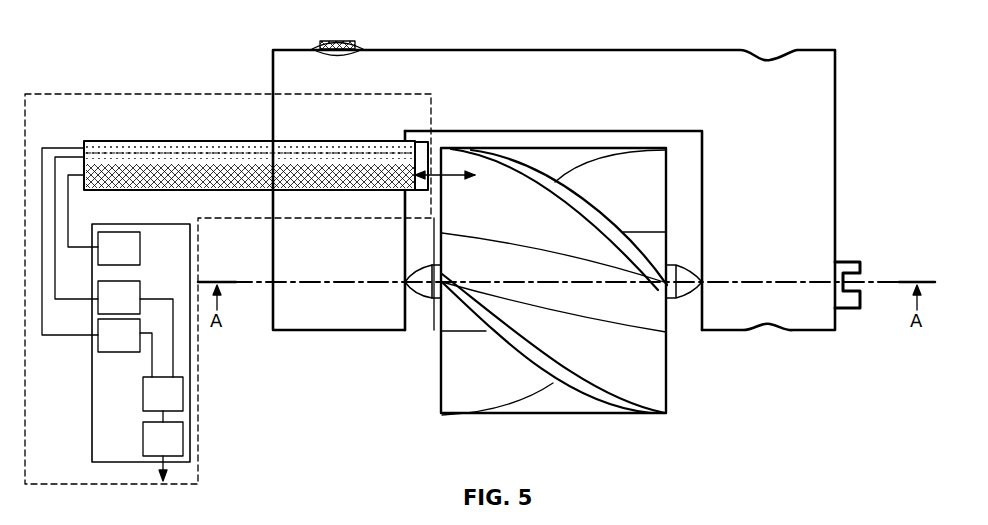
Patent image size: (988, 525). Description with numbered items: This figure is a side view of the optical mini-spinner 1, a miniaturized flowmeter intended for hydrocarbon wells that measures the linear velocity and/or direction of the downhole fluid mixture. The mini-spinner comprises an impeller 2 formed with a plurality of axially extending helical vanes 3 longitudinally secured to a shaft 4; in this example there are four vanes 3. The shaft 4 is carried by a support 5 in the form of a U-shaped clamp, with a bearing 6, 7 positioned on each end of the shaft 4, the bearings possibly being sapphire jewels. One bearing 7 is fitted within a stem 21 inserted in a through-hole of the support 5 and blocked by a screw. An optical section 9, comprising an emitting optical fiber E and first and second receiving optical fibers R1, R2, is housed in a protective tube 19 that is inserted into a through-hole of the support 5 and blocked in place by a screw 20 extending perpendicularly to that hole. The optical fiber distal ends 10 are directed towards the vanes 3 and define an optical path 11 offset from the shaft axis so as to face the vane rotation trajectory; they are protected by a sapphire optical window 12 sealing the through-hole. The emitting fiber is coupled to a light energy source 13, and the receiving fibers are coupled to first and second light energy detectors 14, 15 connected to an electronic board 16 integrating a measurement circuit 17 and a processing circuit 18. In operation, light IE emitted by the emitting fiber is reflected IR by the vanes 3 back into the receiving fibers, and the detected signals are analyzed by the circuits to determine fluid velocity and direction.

The optical mini-spinner 1 is at (301, 401).
The impeller 2 is at (657, 418).
The vanes 3 is at (461, 395).
The shaft 4 is at (667, 334).
The support 5 is at (840, 151).
The bearing 6 is at (420, 306).
The bearing 7 is at (704, 280).
The optical section 9 is at (77, 92).
The optical fiber distal ends 10 is at (416, 141).
The optical path 11 is at (435, 150).
The optical window 12 is at (421, 189).
The light energy source 13 is at (131, 258).
The first light energy detector 14 is at (131, 307).
The second light energy detector 15 is at (131, 345).
The electronic board 16 is at (105, 447).
The measurement circuit 17 is at (175, 403).
The processing circuit 18 is at (175, 448).
The protective tube 19 is at (260, 140).
The screw 20 is at (337, 42).
The stem 21 is at (843, 311).